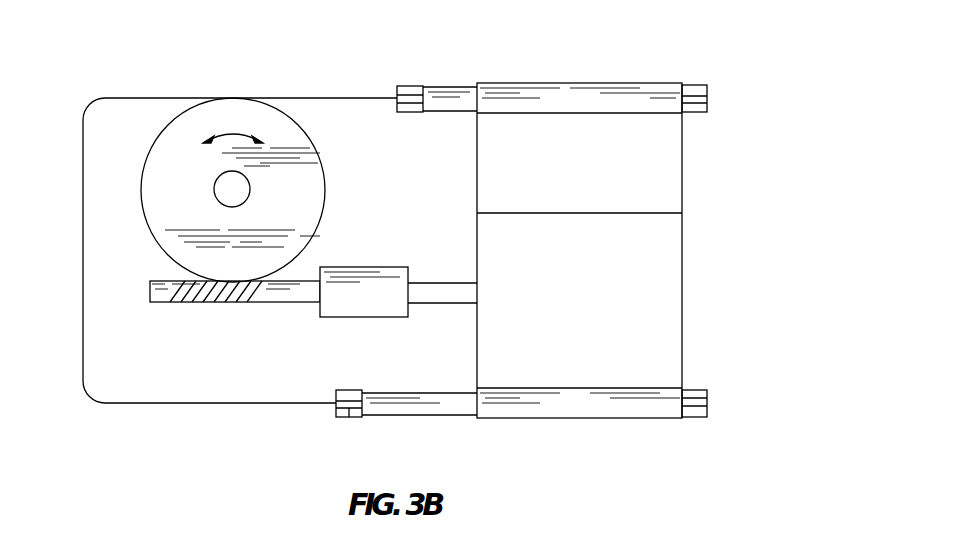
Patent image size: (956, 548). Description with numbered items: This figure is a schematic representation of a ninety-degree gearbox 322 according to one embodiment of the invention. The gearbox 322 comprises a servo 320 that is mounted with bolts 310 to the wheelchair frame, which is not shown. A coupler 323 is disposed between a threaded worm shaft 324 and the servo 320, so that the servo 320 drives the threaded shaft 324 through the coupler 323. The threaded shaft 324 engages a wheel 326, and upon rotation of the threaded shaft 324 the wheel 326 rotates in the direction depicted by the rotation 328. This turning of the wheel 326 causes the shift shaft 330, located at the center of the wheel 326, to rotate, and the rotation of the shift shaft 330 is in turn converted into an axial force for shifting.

The bolts 310 is at (408, 87).
The servo 320 is at (602, 313).
The gearbox 322 is at (637, 60).
The coupler 323 is at (365, 318).
The threaded shaft 324 is at (200, 302).
The wheel 326 is at (325, 189).
The rotation 328 is at (232, 133).
The shift shaft 330 is at (214, 189).